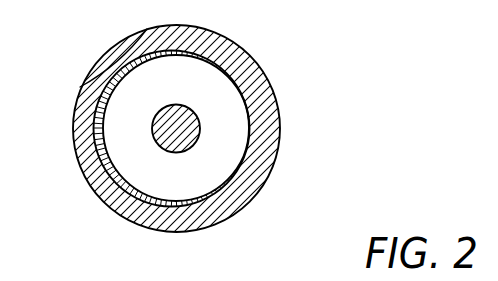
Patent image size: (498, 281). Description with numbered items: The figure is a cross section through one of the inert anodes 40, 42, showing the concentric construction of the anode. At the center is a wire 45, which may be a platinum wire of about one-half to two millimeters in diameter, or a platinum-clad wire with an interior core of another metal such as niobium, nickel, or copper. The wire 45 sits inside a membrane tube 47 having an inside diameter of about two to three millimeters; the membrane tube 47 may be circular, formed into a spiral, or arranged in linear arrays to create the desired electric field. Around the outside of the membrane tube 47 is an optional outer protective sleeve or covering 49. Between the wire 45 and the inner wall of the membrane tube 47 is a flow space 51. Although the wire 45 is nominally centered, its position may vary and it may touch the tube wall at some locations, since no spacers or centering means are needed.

The anode 40 is at (234, 128).
The anode 42 is at (282, 78).
The wire 45 is at (152, 128).
The membrane tube 47 is at (250, 124).
The outer protective sleeve or covering 49 is at (255, 179).
The flow space 51 is at (140, 165).